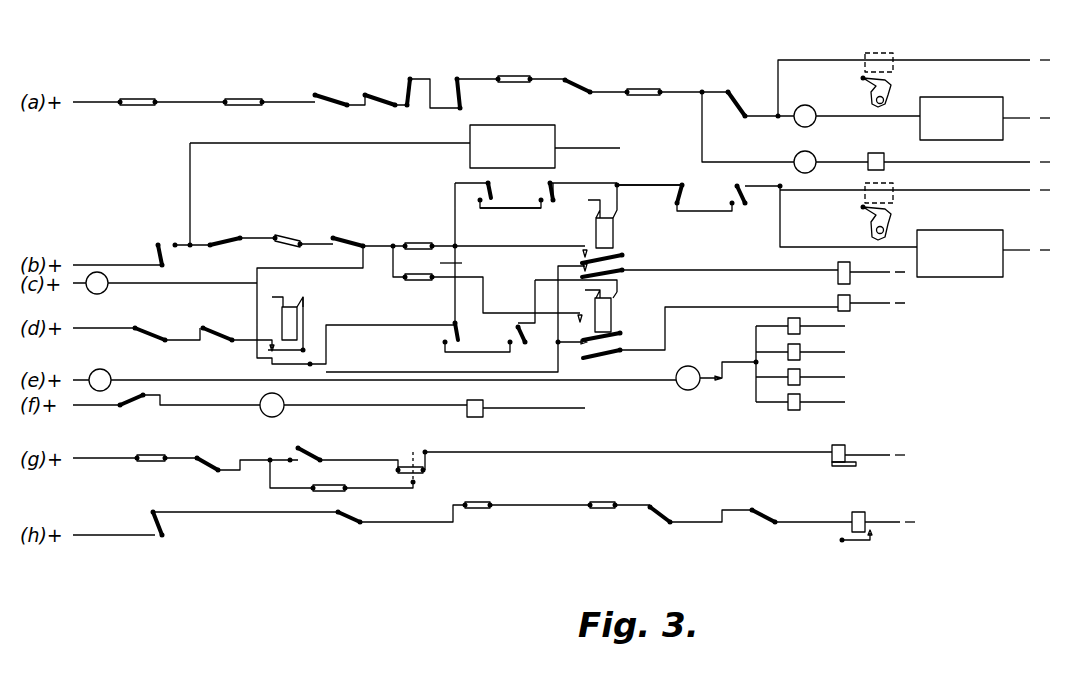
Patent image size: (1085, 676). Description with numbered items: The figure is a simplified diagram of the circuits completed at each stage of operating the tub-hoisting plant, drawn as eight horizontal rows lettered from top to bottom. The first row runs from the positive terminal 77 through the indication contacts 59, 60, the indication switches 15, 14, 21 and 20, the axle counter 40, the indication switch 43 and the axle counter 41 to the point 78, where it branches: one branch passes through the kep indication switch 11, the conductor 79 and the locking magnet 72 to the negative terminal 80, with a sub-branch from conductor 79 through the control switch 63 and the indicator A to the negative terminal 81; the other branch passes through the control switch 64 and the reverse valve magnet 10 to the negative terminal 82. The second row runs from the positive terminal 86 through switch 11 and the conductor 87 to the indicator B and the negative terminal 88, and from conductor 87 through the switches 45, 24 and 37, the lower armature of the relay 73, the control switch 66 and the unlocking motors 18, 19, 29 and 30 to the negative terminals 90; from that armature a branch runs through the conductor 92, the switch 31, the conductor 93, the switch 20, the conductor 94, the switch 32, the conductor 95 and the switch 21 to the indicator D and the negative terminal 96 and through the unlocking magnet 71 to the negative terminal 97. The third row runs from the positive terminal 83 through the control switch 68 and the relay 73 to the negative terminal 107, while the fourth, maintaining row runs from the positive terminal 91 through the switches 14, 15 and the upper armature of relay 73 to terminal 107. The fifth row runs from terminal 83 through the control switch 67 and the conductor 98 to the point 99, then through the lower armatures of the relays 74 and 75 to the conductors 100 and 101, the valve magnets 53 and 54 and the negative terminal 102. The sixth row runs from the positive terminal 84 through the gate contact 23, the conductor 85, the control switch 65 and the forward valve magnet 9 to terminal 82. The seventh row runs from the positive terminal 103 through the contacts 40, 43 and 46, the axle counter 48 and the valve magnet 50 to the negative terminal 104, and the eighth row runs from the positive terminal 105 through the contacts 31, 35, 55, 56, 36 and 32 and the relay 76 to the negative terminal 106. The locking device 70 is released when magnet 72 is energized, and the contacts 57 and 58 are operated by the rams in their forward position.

The forward actuating valve 9 is at (485, 412).
The reverse actuating valve 10 is at (876, 153).
The kep indication contacts 11 is at (456, 170).
The back stop indication contact device 14 is at (265, 207).
The back stop indication contact device 15 is at (275, 207).
The counter unlocking motor mechanism 18 is at (800, 330).
The counter unlocking motor mechanism 19 is at (800, 356).
The counter unlocking indication contacts 20 is at (552, 186).
The counter unlocking indication contacts 21 is at (505, 360).
The gate indication contact device 23 is at (132, 413).
The cage indication contact device 24 is at (288, 230).
The unlocking motor 29 is at (800, 381).
The unlocking motor 30 is at (800, 406).
The indication contacts 31 is at (498, 185).
The indication contacts 32 is at (613, 342).
The back stop indication contact 35 is at (335, 527).
The back stop indication contact 36 is at (666, 505).
The hoist indication contact 37 is at (348, 231).
The axle counter 40 is at (334, 281).
The axle counter 41 is at (644, 79).
The back stop indication contacts 43 is at (397, 265).
The hoist indication contact 45 is at (267, 338).
The indication contact 46 is at (329, 478).
The axle counter 48 is at (613, 467).
The valve actuating magnet 50 is at (848, 450).
The valve actuating magnet 53 is at (838, 276).
The valve actuating magnet 54 is at (858, 305).
The ram indication contact 55 is at (486, 518).
The ram indication contact 56 is at (605, 518).
The indication contact 57 is at (419, 232).
The indication contact 58 is at (419, 290).
The indication contact 59 is at (138, 90).
The indication contact 60 is at (244, 90).
The control switch 63 is at (805, 105).
The control switch 64 is at (813, 152).
The control switch 65 is at (272, 418).
The control switch 66 is at (688, 389).
The control switch 67 is at (106, 372).
The control switch 68 is at (104, 292).
The interlocking member 70 is at (868, 95).
The release magnet 71 is at (890, 200).
The release magnet 72 is at (875, 54).
The relay 73 is at (297, 325).
The relay 74 is at (611, 316).
The relay 75 is at (613, 236).
The relay 76 is at (862, 508).
The positive terminal 77 is at (86, 103).
The branch point 78 is at (742, 115).
The conductor 79 is at (763, 117).
The negative terminal 80 is at (1059, 61).
The negative terminal 81 is at (1059, 119).
The negative terminal 82 is at (780, 293).
The positive terminal 83 is at (80, 287).
The positive terminal 84 is at (88, 406).
The conductor 85 is at (220, 406).
The positive terminal 86 is at (117, 252).
The conductor 87 is at (178, 247).
The negative terminal 88 is at (601, 150).
The negative terminals 90 is at (855, 365).
The positive terminal 91 is at (88, 330).
The conductor 92 is at (464, 264).
The conductor 93 is at (527, 208).
The conductor 94 is at (649, 173).
The conductor 95 is at (714, 211).
The negative terminal 96 is at (1059, 251).
The negative terminal 97 is at (1059, 191).
The conductor 98 is at (220, 378).
The branch point 99 is at (562, 342).
The conductor 100 is at (729, 318).
The conductor 101 is at (752, 260).
The negative terminal 102 is at (917, 292).
The positive terminal 103 is at (105, 446).
The negative terminal 104 is at (918, 456).
The positive terminal 105 is at (90, 530).
The negative terminal 106 is at (929, 523).
The negative terminal 107 is at (270, 299).
The indicator A is at (961, 118).
The indicator B is at (512, 146).
The indicator D is at (960, 253).